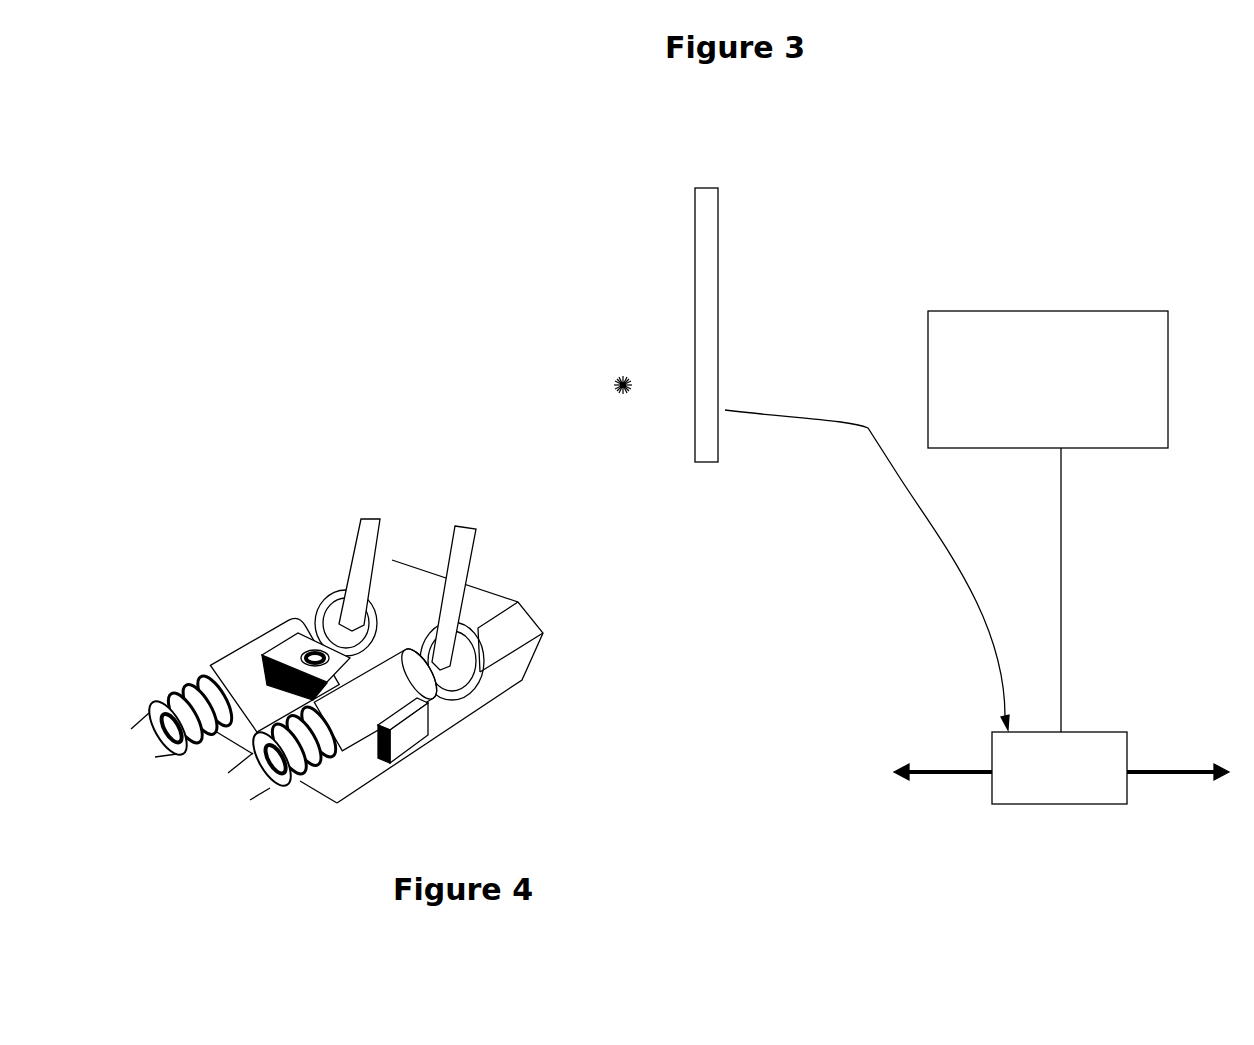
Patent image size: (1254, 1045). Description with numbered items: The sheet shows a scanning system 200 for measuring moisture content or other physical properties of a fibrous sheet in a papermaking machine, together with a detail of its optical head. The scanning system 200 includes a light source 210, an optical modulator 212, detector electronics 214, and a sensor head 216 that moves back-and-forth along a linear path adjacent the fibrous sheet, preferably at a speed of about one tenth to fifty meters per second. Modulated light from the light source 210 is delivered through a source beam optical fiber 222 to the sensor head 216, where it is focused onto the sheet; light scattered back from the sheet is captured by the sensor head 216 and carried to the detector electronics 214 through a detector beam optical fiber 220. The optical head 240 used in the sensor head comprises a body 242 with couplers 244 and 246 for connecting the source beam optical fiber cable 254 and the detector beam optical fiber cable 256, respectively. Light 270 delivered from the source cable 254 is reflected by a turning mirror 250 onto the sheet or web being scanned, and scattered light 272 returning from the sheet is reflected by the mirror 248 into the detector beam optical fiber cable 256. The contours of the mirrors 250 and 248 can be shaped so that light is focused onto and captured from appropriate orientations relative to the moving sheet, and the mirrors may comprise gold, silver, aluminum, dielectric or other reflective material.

In FIG. 3, the scanning system 200 is at (934, 148).
In FIG. 3, the light source 210 is at (614, 362).
In FIG. 3, the optical modulator 212 is at (729, 309).
In FIG. 3, the detector electronics 214 is at (1058, 296).
In FIG. 3, the sensor head 216 is at (980, 815).
In FIG. 3, the detector beam optical fiber 220 is at (1075, 576).
In FIG. 3, the source beam optical fiber 222 is at (885, 483).
In FIG. 4, the optical head 240 is at (169, 487).
In FIG. 4, the body 242 is at (400, 681).
In FIG. 4, the coupler 244 is at (415, 755).
In FIG. 4, the coupler 246 is at (245, 689).
In FIG. 4, the mirror 248 is at (430, 706).
In FIG. 4, the turning mirror 250 is at (305, 606).
In FIG. 4, the source beam optical fiber cable 254 is at (300, 800).
In FIG. 4, the detector beam optical fiber cable 256 is at (115, 716).
In FIG. 4, the light 270 is at (315, 563).
In FIG. 4, the scattered light 272 is at (496, 596).